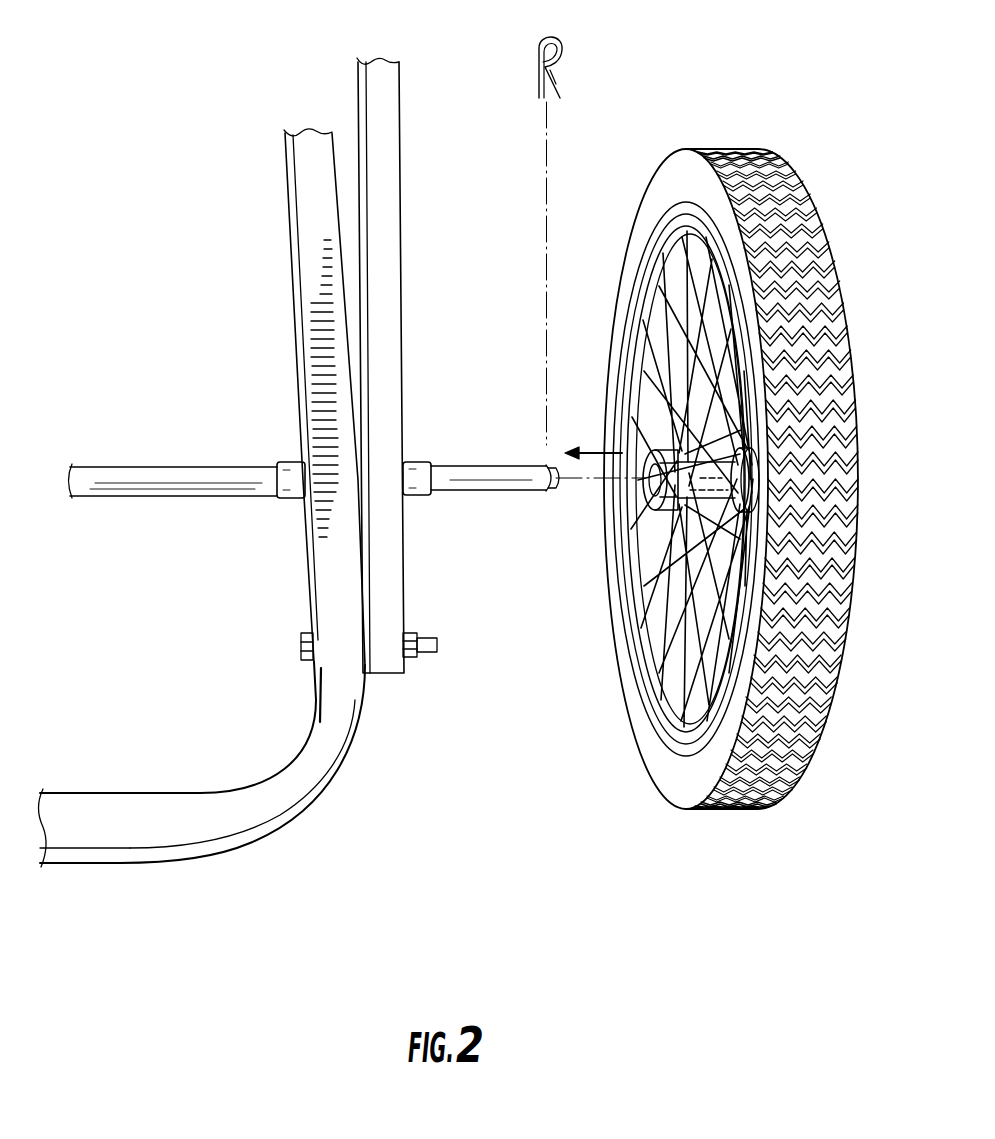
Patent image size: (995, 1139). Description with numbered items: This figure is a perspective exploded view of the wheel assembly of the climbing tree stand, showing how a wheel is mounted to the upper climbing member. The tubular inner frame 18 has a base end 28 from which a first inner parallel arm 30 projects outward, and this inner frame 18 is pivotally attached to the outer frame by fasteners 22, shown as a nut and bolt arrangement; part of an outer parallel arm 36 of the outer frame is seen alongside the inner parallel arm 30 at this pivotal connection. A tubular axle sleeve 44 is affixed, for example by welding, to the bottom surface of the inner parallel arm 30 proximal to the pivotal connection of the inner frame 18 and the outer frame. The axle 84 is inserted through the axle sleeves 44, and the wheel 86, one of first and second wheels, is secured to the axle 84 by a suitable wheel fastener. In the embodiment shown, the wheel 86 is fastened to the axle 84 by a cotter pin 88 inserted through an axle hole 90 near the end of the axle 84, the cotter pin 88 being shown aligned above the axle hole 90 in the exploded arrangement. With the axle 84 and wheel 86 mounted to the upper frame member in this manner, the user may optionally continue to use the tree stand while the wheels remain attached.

The tubular inner frame 18 is at (316, 820).
The fasteners 22 is at (446, 644).
The base end 28 is at (79, 858).
The inner parallel arm 30 is at (291, 226).
The outer parallel arm 36 is at (398, 118).
The tubular axle sleeve 44 is at (295, 492).
The axle 84 is at (177, 477).
The wheel 86 is at (720, 150).
The cotter pin 88 is at (562, 45).
The axle hole 90 is at (553, 488).